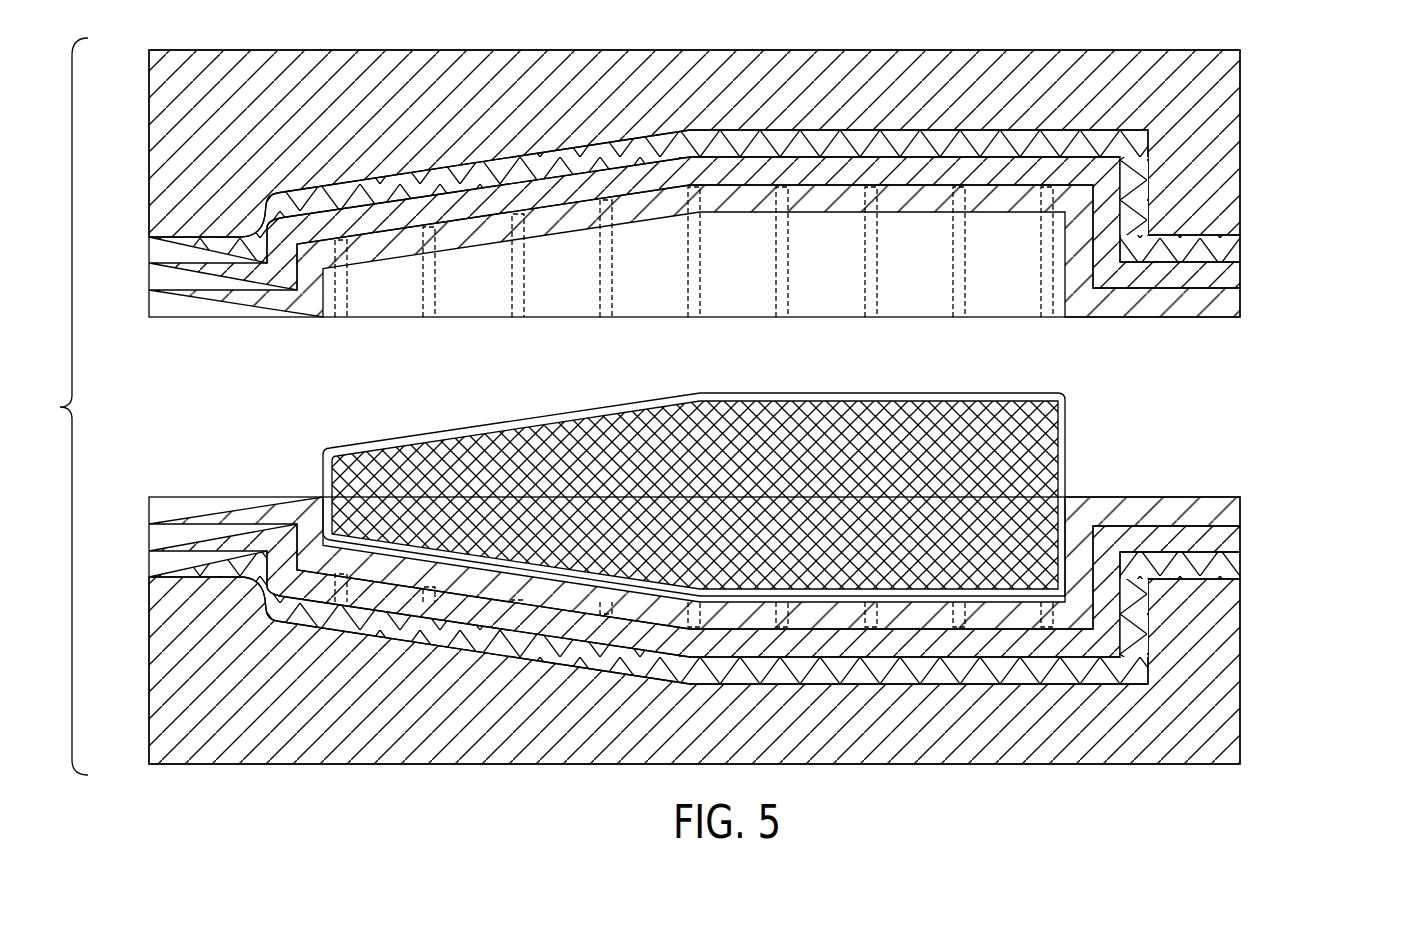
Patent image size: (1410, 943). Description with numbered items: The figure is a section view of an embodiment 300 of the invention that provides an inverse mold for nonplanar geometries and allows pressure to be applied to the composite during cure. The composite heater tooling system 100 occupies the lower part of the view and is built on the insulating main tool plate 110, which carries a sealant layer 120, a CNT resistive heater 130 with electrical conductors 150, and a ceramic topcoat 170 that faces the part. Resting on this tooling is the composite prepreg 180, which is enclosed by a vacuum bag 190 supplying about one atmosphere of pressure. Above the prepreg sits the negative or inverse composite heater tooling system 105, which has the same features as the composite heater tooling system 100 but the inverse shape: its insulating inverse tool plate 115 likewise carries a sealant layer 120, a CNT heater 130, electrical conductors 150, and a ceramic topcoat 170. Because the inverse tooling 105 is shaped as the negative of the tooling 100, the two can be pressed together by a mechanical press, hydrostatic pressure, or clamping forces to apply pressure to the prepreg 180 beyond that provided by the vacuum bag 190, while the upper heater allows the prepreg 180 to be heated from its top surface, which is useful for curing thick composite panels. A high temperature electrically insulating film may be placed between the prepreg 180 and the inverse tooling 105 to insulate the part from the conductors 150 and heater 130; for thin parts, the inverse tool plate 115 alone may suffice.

The composite heater tooling system 100 is at (1312, 628).
The inverse composite heater tooling system 105 is at (1312, 178).
The main tool plate 110 is at (1227, 710).
The inverse tool plate 115 is at (1228, 104).
The sealant layer 120 is at (1233, 243).
The CNT resistive heater 130 is at (240, 280).
The electrical conductors 150 is at (1044, 305).
The ceramic topcoat 170 is at (1180, 312).
The composite prepreg 180 is at (485, 452).
The vacuum bag 190 is at (348, 447).
The embodiment 300 is at (54, 406).